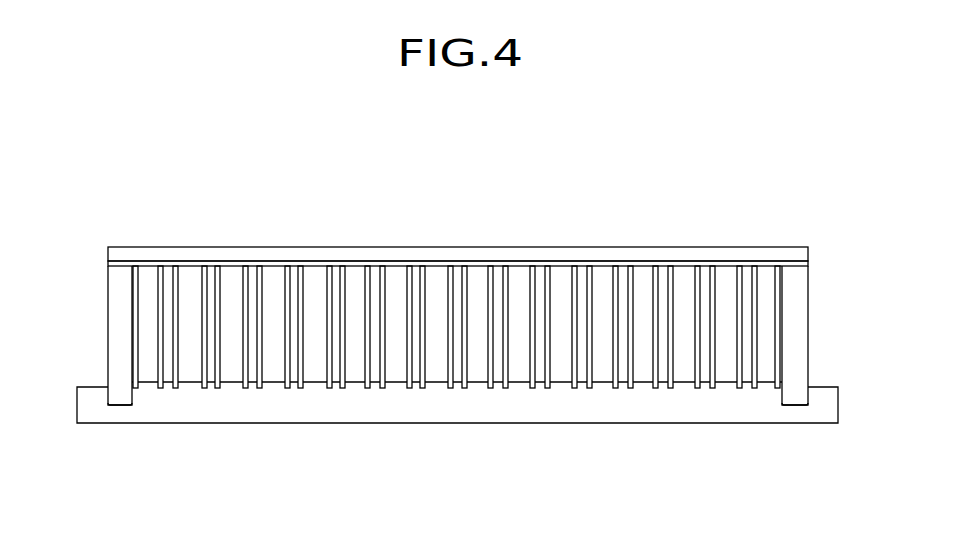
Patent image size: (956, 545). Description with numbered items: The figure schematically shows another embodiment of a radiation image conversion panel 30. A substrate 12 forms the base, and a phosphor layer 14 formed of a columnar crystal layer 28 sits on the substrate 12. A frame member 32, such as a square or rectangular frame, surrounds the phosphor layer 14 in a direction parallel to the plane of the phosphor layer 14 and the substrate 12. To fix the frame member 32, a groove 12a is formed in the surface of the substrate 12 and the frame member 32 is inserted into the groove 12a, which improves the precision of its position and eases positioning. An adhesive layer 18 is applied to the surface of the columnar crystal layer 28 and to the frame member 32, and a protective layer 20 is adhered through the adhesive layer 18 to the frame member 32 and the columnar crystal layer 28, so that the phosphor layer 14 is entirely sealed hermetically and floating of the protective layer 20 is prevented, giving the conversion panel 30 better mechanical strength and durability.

The substrate 12 is at (827, 395).
The groove 12a is at (119, 410).
The phosphor layer 14 is at (124, 316).
The adhesive layer 18 is at (800, 264).
The protective layer 20 is at (798, 254).
The columnar crystal layer 28 is at (147, 290).
The conversion panel 30 is at (449, 273).
The frame member 32 is at (798, 307).